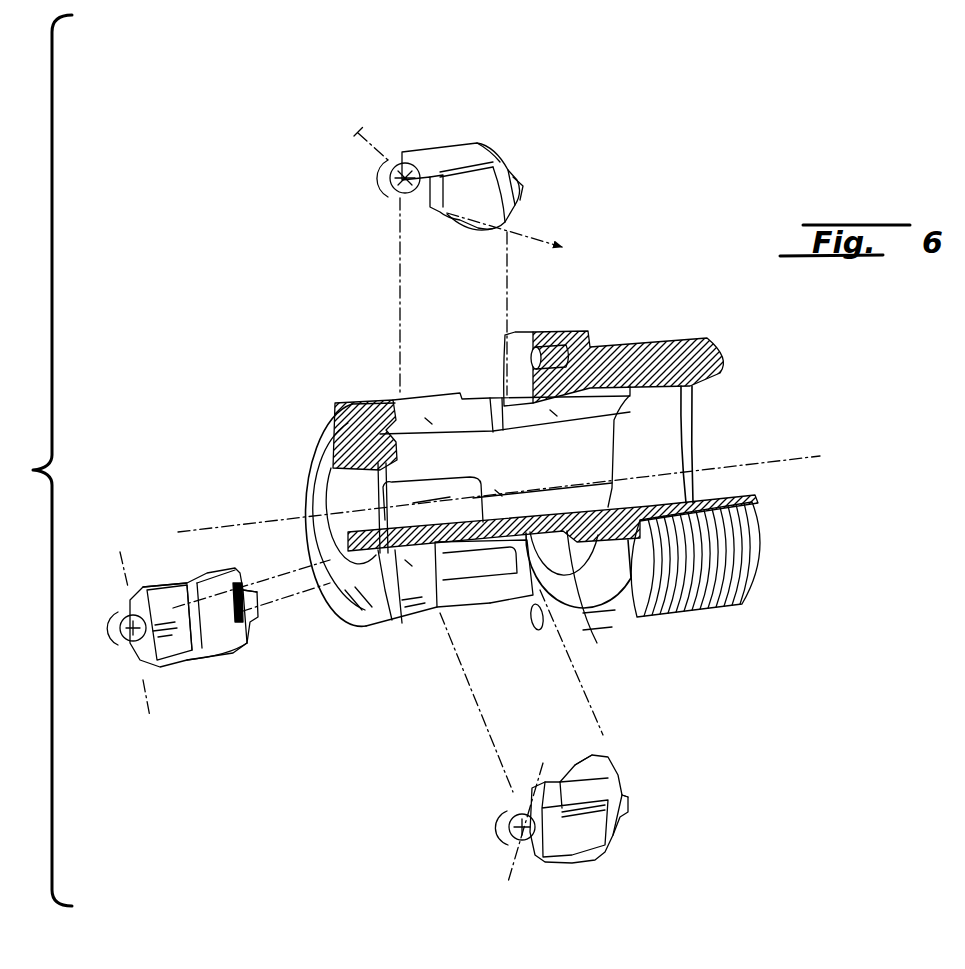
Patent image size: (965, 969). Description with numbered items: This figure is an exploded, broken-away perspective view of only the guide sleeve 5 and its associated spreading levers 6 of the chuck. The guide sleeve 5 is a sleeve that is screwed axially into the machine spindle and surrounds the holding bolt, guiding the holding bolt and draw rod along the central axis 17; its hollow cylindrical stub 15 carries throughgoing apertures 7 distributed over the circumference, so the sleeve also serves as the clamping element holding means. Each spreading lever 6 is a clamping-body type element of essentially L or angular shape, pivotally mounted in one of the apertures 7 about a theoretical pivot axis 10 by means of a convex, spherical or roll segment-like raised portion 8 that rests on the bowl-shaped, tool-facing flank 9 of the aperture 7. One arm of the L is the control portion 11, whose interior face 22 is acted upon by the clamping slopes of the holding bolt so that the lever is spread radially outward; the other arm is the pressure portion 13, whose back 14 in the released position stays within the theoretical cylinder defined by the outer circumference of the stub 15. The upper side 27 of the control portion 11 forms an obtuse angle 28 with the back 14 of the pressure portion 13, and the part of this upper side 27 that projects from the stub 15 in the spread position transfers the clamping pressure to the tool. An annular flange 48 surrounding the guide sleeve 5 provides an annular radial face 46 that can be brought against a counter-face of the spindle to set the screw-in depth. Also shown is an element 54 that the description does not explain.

The guide sleeve 5 is at (310, 428).
The spreading lever 6 is at (441, 140).
The throughgoing aperture 7 is at (437, 407).
The raised portion 8 is at (390, 180).
The flank 9 is at (395, 408).
The theoretical pivot axis 10 is at (353, 135).
The control portion 11 is at (497, 213).
The pressure portion 13 is at (447, 193).
The back of the pressure portion 14 is at (460, 153).
The hollow cylindrical stub 15 is at (360, 405).
The central axis 17 is at (817, 457).
The interior face 22 is at (493, 223).
The upper side 27 is at (515, 181).
The obtuse angle 28 is at (528, 252).
The annular radial face 46 is at (598, 345).
The annular flange 48 is at (575, 330).
The bevel 54 is at (511, 178).